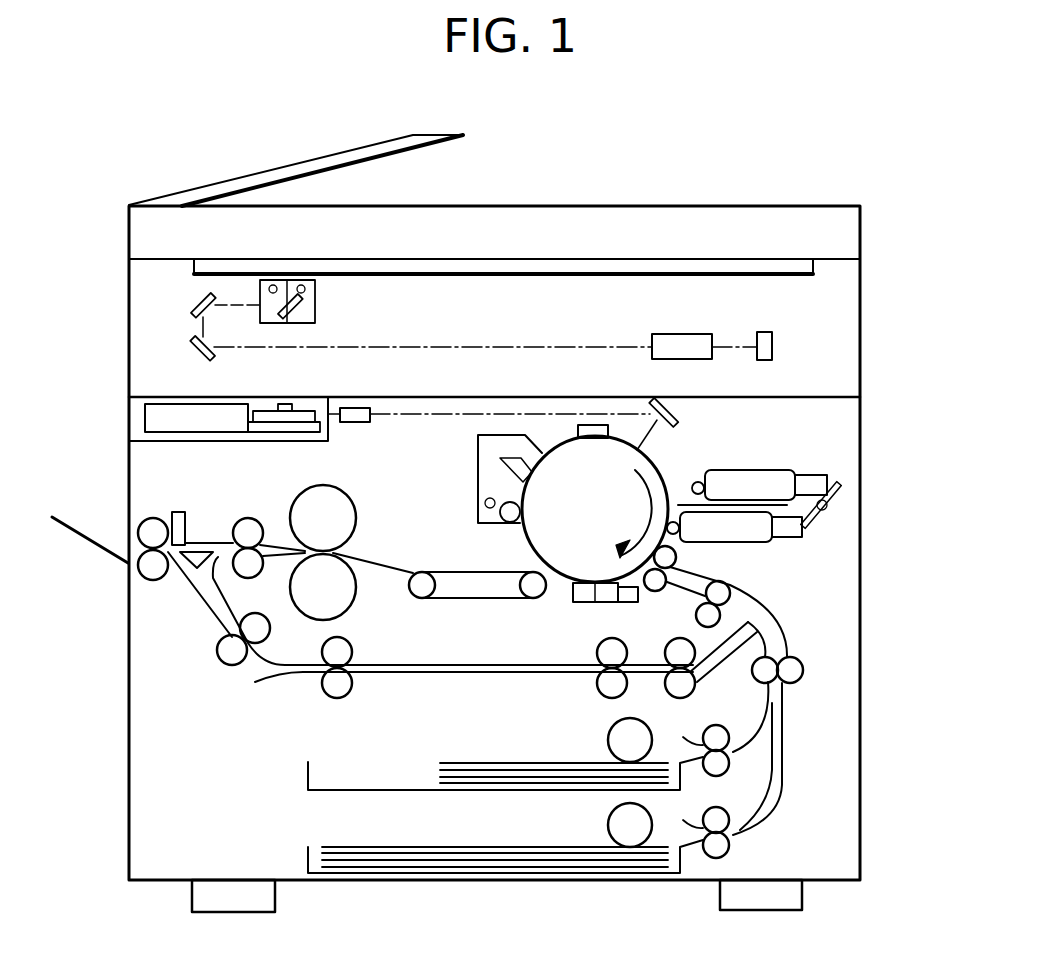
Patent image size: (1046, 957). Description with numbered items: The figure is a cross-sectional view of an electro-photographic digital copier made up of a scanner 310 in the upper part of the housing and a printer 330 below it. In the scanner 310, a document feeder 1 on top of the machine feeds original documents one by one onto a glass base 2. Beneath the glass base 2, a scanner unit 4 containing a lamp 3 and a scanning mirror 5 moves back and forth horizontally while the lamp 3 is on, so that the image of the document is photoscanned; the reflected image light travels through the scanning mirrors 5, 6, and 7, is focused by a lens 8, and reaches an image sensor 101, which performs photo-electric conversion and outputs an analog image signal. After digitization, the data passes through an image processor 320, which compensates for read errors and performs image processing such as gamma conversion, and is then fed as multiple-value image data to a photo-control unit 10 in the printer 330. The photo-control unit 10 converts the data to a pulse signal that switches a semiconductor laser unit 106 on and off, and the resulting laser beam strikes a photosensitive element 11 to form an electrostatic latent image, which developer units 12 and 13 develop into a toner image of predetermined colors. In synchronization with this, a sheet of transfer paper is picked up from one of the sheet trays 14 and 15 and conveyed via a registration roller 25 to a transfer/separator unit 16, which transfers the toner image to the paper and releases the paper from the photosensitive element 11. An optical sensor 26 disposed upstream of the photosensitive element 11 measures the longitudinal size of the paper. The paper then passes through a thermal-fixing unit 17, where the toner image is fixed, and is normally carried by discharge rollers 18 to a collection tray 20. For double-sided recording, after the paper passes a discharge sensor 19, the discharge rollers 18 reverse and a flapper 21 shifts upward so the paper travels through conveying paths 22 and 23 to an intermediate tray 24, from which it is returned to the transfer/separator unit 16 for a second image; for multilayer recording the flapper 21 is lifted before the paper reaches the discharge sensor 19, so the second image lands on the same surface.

The document feeder 1 is at (255, 174).
The glass base 2 is at (717, 258).
The lamp 3 is at (305, 290).
The scanner unit 4 is at (316, 316).
The scanning mirror 5 is at (291, 322).
The scanning mirror 6 is at (197, 302).
The scanning mirror 7 is at (196, 350).
The lens 8 is at (697, 334).
The image sensor 101 is at (765, 332).
The photo-control unit 10 is at (268, 398).
The image processor 320 is at (210, 434).
The semiconductor laser unit 106 is at (355, 423).
The photosensitive element 11 is at (560, 442).
The developer unit 12 is at (787, 470).
The developer unit 13 is at (770, 542).
The registration roller 25 is at (678, 555).
The transfer/separator unit 16 is at (600, 603).
The optical sensor 26 is at (628, 603).
The thermal-fixing unit 17 is at (352, 512).
The discharge rollers 18 is at (157, 519).
The discharge sensor 19 is at (190, 520).
The collection tray 20 is at (93, 544).
The flapper 21 is at (188, 576).
The conveying path 22 is at (212, 613).
The conveying path 23 is at (303, 674).
The intermediate tray 24 is at (498, 674).
The sheet tray 14 is at (677, 777).
The sheet tray 15 is at (673, 866).
The scanner 310 is at (868, 368).
The printer 330 is at (868, 618).